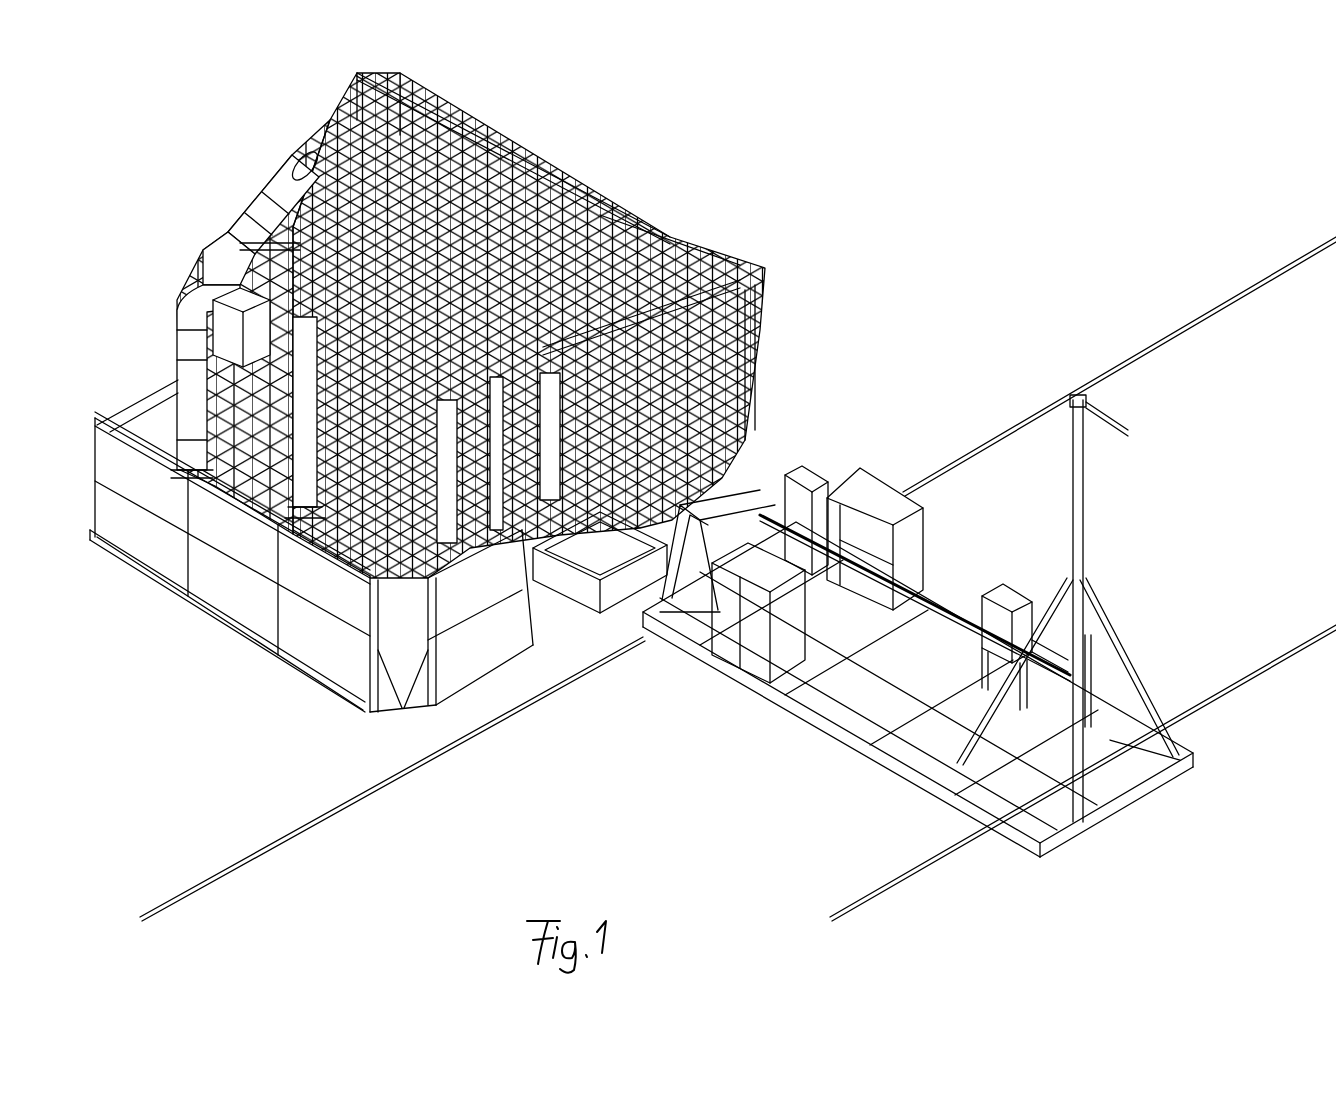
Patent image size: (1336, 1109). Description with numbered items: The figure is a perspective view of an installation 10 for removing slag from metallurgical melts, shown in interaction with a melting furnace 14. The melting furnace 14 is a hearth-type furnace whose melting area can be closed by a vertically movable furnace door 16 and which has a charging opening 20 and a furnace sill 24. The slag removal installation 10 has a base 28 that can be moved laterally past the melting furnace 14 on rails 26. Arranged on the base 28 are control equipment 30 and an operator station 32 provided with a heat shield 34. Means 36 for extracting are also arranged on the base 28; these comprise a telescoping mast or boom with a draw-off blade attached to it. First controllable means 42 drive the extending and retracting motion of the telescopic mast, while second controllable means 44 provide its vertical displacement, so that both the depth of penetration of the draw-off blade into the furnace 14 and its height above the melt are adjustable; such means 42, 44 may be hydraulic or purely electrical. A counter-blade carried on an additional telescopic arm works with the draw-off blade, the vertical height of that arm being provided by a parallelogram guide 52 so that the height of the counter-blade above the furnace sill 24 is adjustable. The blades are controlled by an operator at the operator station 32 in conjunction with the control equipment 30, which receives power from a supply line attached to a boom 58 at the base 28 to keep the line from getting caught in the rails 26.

The installation 10 is at (1018, 348).
The melting furnace 14 is at (703, 192).
The furnace door 16 is at (700, 258).
The charging opening 20 is at (745, 403).
The furnace sill 24 is at (583, 465).
The rails 26 is at (1200, 710).
The base 28 is at (903, 710).
The control equipment 30 is at (1013, 600).
The operator station 32 is at (905, 530).
The heat shield 34 is at (802, 483).
The means for extracting 36 is at (750, 493).
The first controllable means 42 is at (1110, 690).
The second controllable means 44 is at (830, 665).
The parallelogram guide 52 is at (693, 560).
The boom 58 is at (1082, 465).